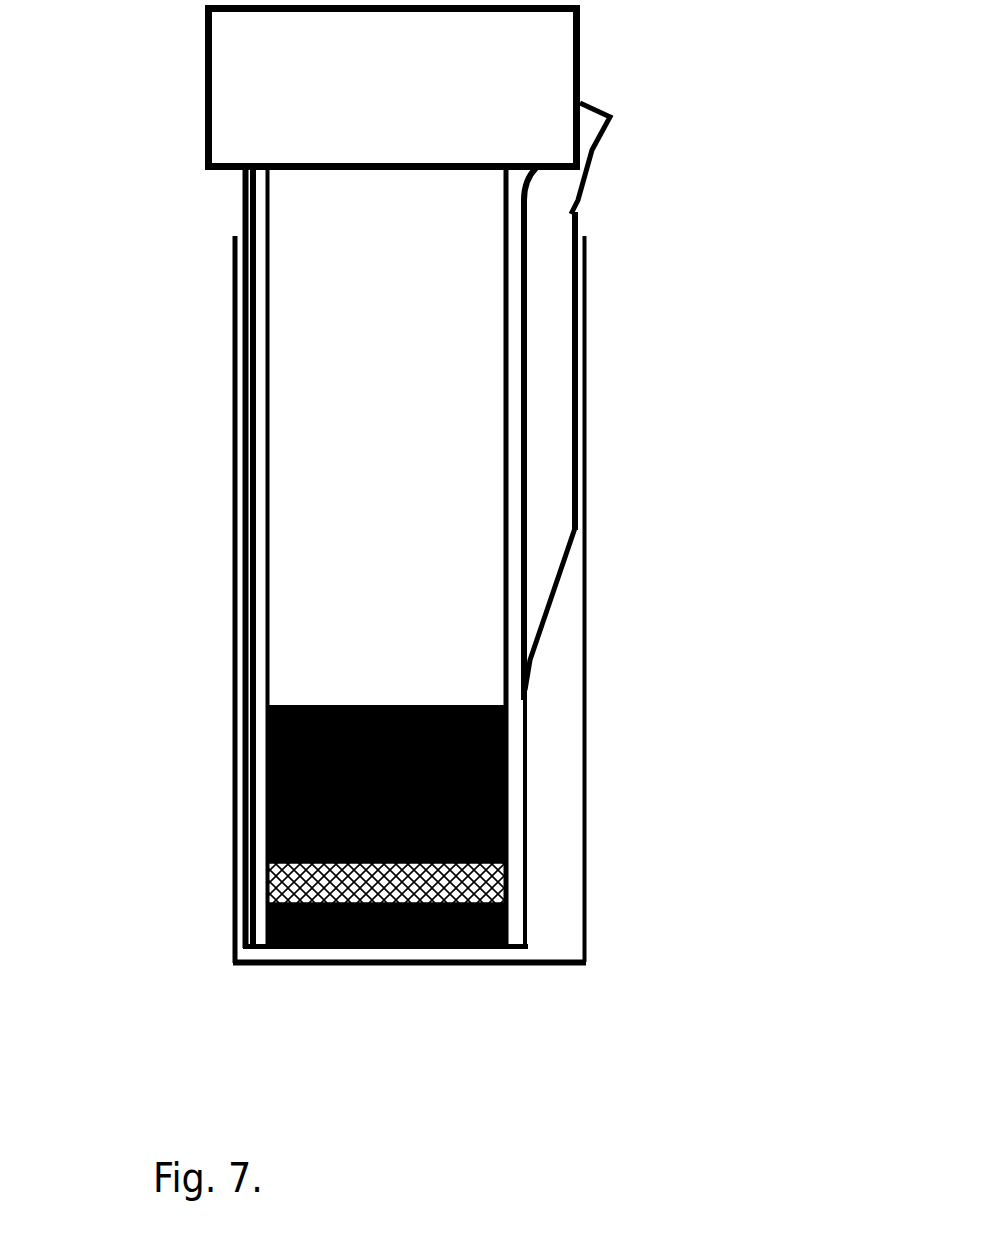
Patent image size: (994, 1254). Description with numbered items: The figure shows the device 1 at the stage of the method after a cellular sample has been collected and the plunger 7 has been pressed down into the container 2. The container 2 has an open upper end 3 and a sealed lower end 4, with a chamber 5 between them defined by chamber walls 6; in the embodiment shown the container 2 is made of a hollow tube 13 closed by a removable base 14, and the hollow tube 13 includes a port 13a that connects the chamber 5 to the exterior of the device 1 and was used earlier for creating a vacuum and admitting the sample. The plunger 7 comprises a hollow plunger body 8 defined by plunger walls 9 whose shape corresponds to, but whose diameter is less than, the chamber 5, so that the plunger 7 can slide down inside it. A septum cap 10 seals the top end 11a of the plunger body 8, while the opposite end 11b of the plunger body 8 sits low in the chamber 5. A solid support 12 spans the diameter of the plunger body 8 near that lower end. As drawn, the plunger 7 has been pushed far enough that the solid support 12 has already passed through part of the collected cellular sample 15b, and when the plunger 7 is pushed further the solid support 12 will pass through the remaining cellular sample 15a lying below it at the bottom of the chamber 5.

The device 1 is at (133, 533).
The container 2 is at (555, 500).
The open upper end 3 is at (240, 238).
The sealed lower end 4 is at (410, 963).
The chamber 5 is at (386, 784).
The chamber walls 6 is at (528, 705).
The plunger 7 is at (483, 283).
The hollow plunger body 8 is at (328, 558).
The plunger walls 9 is at (257, 345).
The septum cap 10 is at (393, 88).
The top end of plunger body 11a is at (243, 168).
The lower end of tube 11b is at (260, 925).
The solid support 12 is at (303, 883).
The hollow tube 13 is at (528, 863).
The port 13a is at (588, 143).
The base 14 is at (584, 778).
The remaining cellular sample 15a is at (507, 928).
The collected cellular sample 15b is at (505, 752).